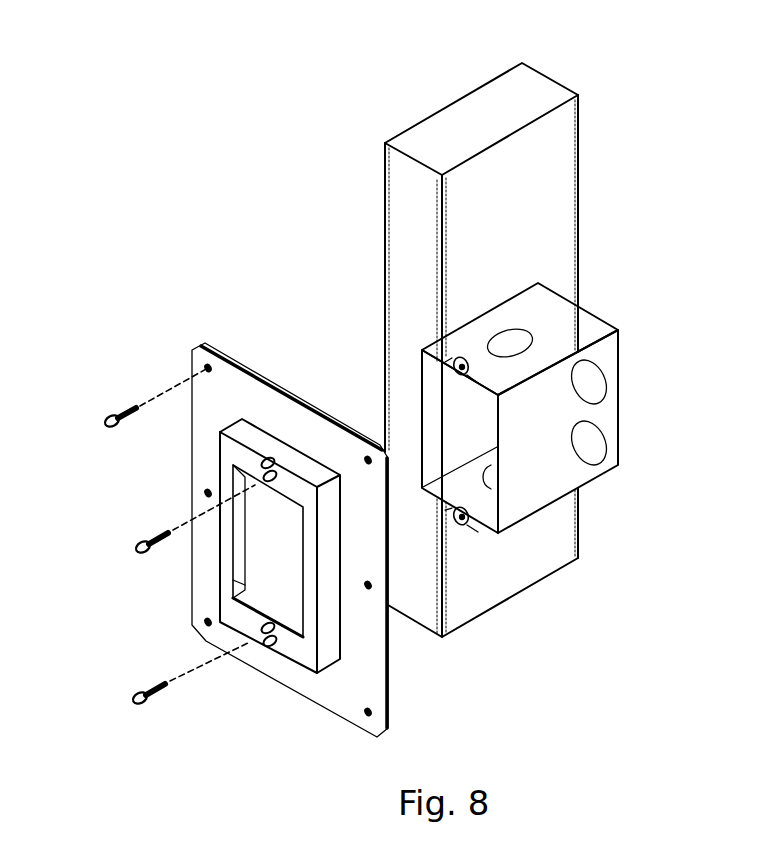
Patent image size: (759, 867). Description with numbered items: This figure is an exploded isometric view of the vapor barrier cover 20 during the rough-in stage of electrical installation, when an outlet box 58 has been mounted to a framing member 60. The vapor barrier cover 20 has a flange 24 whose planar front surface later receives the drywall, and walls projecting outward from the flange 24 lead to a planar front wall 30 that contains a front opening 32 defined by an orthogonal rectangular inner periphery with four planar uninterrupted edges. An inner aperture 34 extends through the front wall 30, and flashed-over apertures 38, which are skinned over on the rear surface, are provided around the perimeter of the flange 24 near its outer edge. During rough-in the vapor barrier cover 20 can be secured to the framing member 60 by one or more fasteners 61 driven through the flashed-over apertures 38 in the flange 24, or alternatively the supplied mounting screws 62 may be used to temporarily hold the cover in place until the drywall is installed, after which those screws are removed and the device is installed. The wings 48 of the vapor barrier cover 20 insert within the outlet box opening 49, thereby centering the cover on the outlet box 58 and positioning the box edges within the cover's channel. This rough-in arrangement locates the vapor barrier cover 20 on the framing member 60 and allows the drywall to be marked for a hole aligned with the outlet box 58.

The vapor barrier cover 20 is at (208, 506).
The flange 24 is at (378, 533).
The front wall 30 is at (222, 595).
The front opening 32 is at (263, 561).
The inner aperture 34 is at (270, 478).
The flashed-over aperture 38 is at (209, 367).
The wings 48 is at (240, 583).
The outlet box opening 49 is at (470, 428).
The outlet box 58 is at (581, 408).
The framing member 60 is at (489, 235).
The fasteners 61 is at (120, 410).
The mounting screws 62 is at (158, 532).